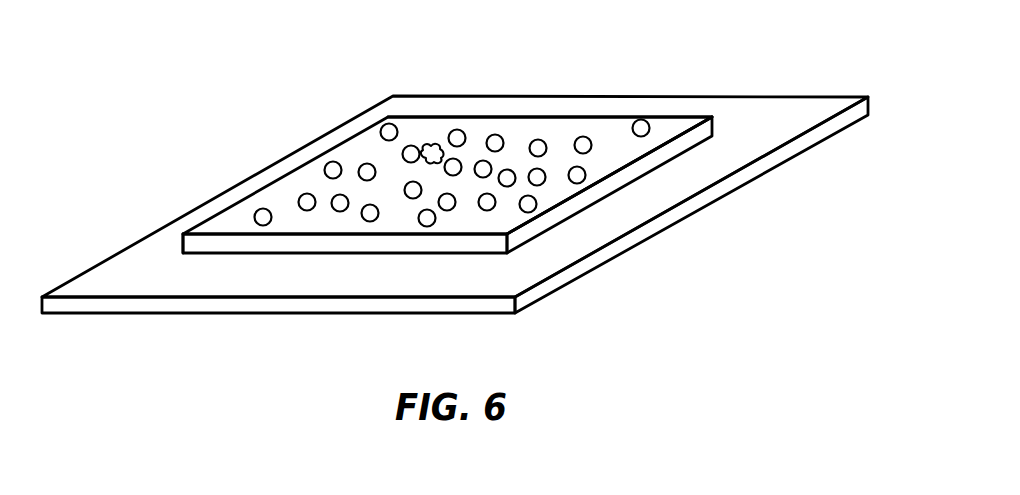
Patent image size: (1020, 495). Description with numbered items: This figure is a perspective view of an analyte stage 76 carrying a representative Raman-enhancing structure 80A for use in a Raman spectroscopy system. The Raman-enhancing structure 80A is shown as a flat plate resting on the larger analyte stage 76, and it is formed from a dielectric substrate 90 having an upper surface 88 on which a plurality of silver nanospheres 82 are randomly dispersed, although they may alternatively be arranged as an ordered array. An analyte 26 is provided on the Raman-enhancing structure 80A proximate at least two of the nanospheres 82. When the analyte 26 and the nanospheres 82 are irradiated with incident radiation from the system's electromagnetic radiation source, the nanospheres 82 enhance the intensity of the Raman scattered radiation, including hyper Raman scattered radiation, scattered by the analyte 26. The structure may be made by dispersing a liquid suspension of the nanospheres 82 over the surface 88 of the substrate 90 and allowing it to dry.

The analyte stage 76 is at (123, 268).
The surface 88 is at (280, 193).
The dielectric substrate 90 is at (196, 245).
The Raman-enhancing structure 80A is at (569, 134).
The silver nanospheres 82 is at (539, 140).
The analyte 26 is at (435, 143).